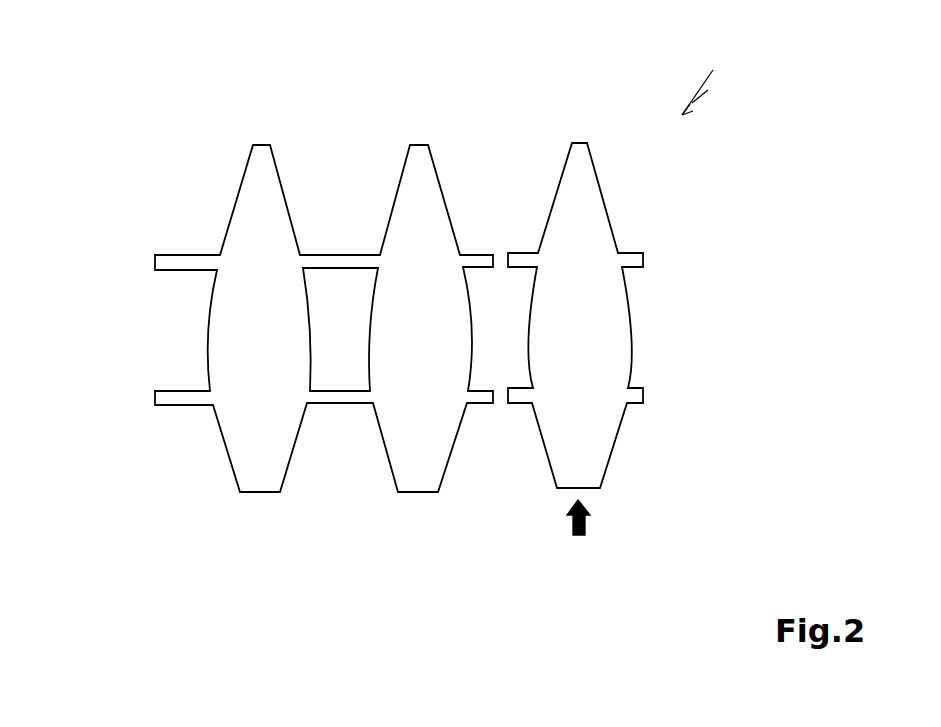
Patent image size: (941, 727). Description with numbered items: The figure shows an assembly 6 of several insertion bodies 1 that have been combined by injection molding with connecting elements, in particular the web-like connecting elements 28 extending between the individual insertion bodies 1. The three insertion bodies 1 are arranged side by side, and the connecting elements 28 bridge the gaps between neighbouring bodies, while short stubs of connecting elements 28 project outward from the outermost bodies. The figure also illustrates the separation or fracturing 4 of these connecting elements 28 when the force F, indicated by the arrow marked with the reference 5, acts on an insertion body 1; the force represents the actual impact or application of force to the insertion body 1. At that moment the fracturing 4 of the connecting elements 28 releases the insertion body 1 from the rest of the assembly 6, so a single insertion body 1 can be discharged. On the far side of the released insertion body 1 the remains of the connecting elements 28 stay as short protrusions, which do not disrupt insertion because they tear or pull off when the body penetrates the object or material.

The insertion body 1 is at (401, 350).
The connecting element 28 is at (185, 255).
The fracturing 4 is at (500, 253).
The force direction 5 is at (596, 543).
The assembly 6 is at (707, 82).